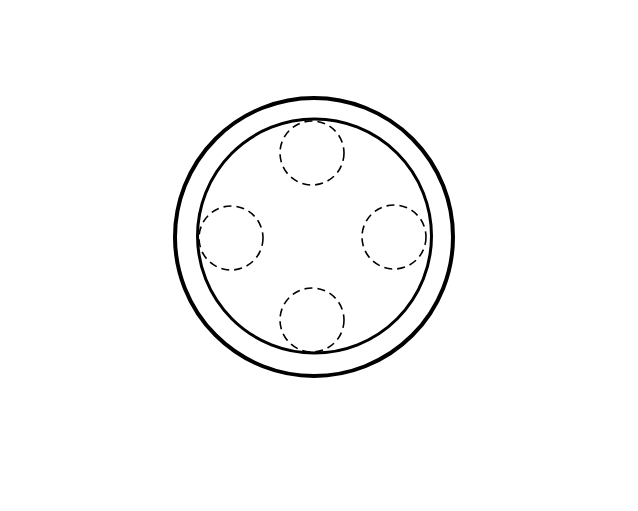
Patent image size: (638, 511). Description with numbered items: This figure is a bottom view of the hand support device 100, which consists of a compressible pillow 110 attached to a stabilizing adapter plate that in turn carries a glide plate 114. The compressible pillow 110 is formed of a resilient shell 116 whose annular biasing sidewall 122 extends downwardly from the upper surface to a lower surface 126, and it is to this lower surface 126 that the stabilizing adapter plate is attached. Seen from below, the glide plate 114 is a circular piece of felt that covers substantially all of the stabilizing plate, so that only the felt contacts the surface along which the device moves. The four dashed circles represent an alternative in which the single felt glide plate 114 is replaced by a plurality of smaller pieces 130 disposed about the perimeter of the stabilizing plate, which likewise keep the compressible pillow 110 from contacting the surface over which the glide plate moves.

The hand support device 100 is at (180, 124).
The compressible pillow 110 is at (176, 210).
The glide plate 114 is at (223, 308).
The resilient shell 116 is at (413, 142).
The annular biasing sidewall 122 is at (446, 284).
The lower surface 126 is at (403, 320).
The smaller pieces 130 is at (317, 138).